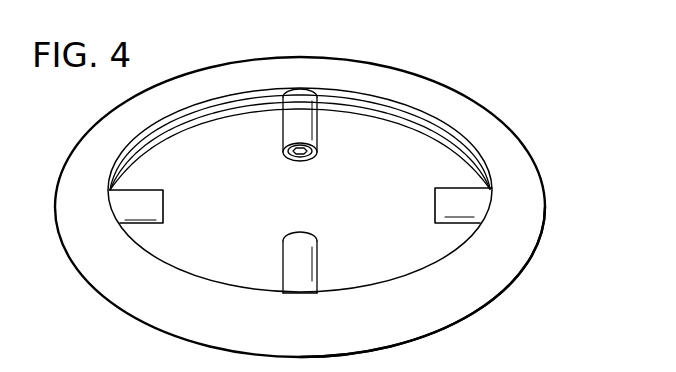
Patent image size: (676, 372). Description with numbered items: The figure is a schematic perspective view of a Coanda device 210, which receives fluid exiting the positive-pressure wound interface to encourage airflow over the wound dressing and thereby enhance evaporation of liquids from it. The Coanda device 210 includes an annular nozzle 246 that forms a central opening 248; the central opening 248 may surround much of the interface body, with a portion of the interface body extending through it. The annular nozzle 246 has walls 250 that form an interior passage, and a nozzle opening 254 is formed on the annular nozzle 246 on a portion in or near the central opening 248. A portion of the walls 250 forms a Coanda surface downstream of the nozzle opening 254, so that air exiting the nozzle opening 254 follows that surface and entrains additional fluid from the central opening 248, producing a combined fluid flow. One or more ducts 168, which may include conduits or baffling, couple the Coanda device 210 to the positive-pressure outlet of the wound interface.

The Coanda device 210 is at (393, 66).
The annular nozzle 246 is at (258, 68).
The central opening 248 is at (318, 197).
The walls 250 is at (544, 223).
The nozzle opening 254 is at (201, 113).
The ducts 168 is at (318, 127).